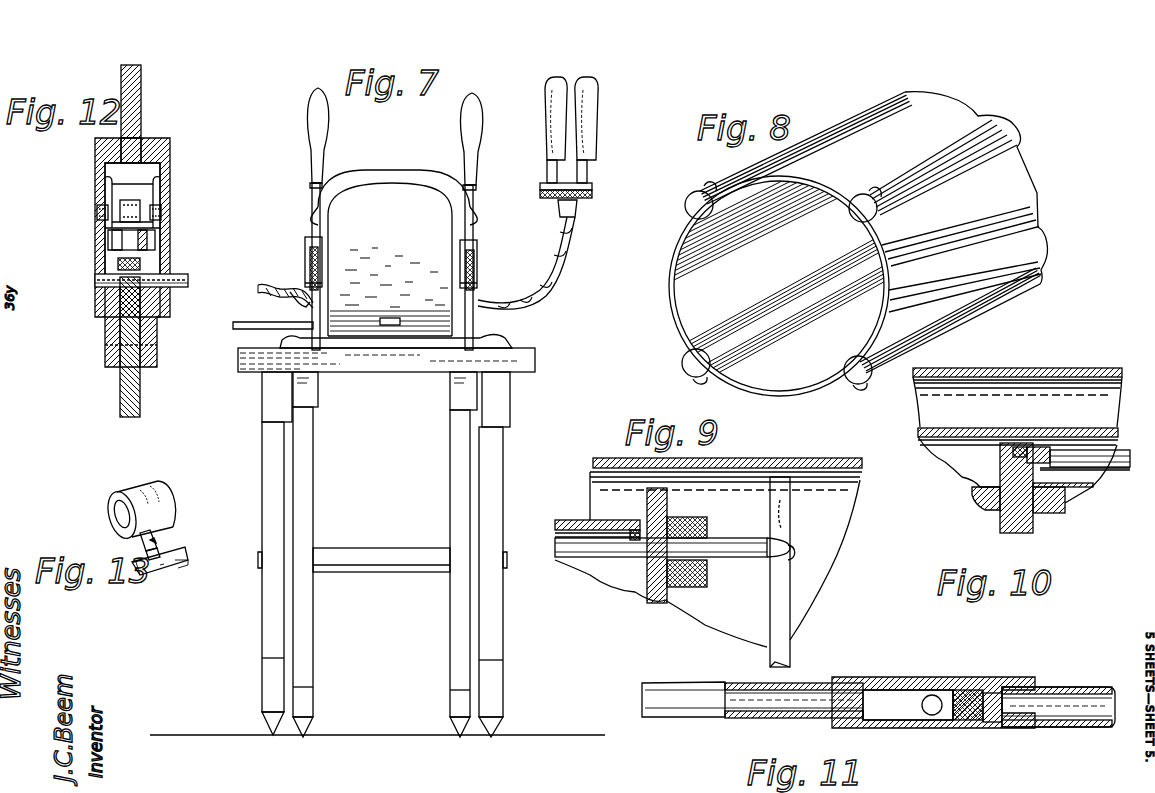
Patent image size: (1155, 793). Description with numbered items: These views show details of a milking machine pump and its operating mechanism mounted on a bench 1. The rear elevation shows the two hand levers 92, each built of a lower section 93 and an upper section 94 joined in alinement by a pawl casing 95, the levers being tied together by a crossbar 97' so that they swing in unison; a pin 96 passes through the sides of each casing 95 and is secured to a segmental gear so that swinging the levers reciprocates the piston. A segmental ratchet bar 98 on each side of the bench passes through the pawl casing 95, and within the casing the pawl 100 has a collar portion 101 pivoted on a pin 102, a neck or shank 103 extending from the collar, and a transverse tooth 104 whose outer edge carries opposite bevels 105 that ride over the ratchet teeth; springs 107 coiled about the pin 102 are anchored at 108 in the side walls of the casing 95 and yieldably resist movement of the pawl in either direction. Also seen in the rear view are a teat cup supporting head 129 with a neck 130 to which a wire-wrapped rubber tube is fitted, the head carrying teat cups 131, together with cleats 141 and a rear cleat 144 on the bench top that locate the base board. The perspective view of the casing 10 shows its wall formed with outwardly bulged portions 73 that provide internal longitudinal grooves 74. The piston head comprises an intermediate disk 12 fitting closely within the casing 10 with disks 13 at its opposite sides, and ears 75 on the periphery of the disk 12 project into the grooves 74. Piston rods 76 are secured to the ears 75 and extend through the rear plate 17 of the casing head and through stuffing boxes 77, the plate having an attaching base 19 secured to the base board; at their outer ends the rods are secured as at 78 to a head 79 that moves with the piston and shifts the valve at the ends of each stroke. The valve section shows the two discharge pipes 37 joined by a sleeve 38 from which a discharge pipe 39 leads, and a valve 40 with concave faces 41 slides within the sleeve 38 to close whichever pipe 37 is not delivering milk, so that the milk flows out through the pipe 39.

In FIG. 7, the bench 1 is at (520, 362).
In FIG. 8, the casing 10 is at (843, 254).
In FIG. 9, the casing 10 is at (575, 520).
In FIG. 10, the intermediate disk 12 is at (1033, 533).
In FIG. 10, the disks 13 is at (983, 498).
In FIG. 9, the plate 17 is at (667, 600).
In FIG. 9, the attaching base 19 is at (635, 530).
In FIG. 9, the pipes 37 is at (793, 686).
In FIG. 11, the pipes 37 is at (793, 686).
In FIG. 11, the sleeve 38 is at (887, 686).
In FIG. 7, the outlet or discharge pipe 39 is at (255, 324).
In FIG. 11, the outlet or discharge pipe 39 is at (938, 700).
In FIG. 11, the valve 40 is at (968, 692).
In FIG. 11, the concave faces 41 is at (1000, 688).
In FIG. 8, the outwardly bulged longitudinally extending portions 73 is at (973, 138).
In FIG. 10, the outwardly bulged longitudinally extending portions 73 is at (1000, 437).
In FIG. 8, the longitudinally extending grooves 74 is at (880, 203).
In FIG. 10, the longitudinally extending grooves 74 is at (1068, 448).
In FIG. 10, the ears 75 is at (1030, 447).
In FIG. 9, the piston rods 76 is at (615, 555).
In FIG. 10, the piston rods 76 is at (1112, 470).
In FIG. 9, the stuffing boxes 77 is at (700, 520).
In FIG. 9, the rod-to-head connection 78 is at (792, 550).
In FIG. 9, the head 79 is at (790, 510).
In FIG. 12, the hand levers 92 is at (133, 126).
In FIG. 7, the hand levers 92 is at (312, 107).
In FIG. 12, the lower section 93 is at (132, 400).
In FIG. 12, the upper section 94 is at (141, 79).
In FIG. 12, the casing 95 is at (167, 260).
In FIG. 7, the casing 95 is at (307, 247).
In FIG. 12, the pin 96 is at (180, 288).
In FIG. 7, the pin 96 is at (477, 252).
In FIG. 7, the crossbar 97' is at (394, 234).
In FIG. 12, the segmental ratchet bar 98 is at (123, 268).
In FIG. 7, the segmental ratchet bar 98 is at (310, 266).
In FIG. 12, the pawl 100 is at (134, 234).
In FIG. 13, the pawl 100 is at (158, 525).
In FIG. 12, the collar portion 101 is at (126, 210).
In FIG. 13, the collar portion 101 is at (160, 500).
In FIG. 12, the pin 102 is at (161, 212).
In FIG. 13, the neck or shank 103 is at (165, 543).
In FIG. 12, the transverse tooth 104 is at (128, 244).
In FIG. 13, the transverse tooth 104 is at (168, 570).
In FIG. 13, the bevels 105 is at (186, 563).
In FIG. 12, the springs 107 is at (155, 203).
In FIG. 12, the spring anchorage 108 is at (167, 167).
In FIG. 7, the teat cup supporting head 129 is at (592, 195).
In FIG. 7, the neck 130 is at (575, 212).
In FIG. 7, the teat cups 131 is at (557, 128).
In FIG. 7, the cleats 141 is at (482, 343).
In FIG. 7, the cleat 144 is at (412, 350).